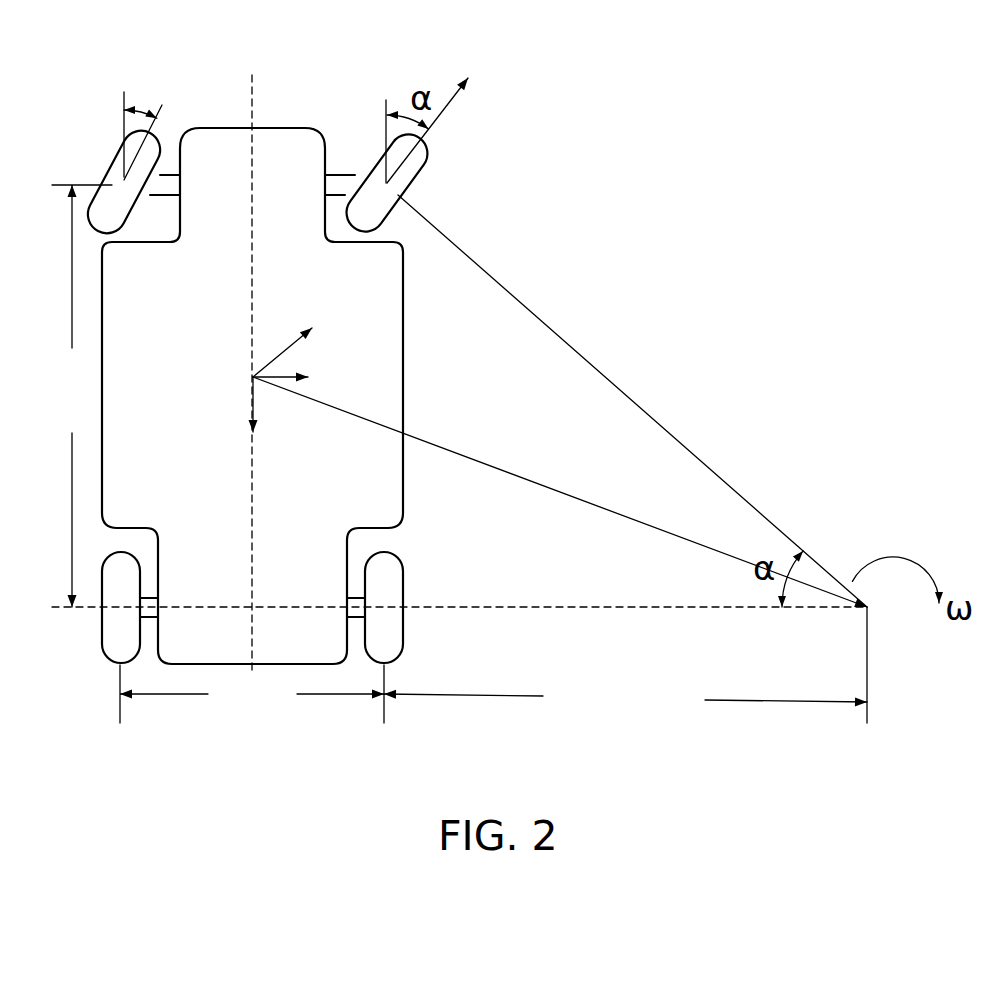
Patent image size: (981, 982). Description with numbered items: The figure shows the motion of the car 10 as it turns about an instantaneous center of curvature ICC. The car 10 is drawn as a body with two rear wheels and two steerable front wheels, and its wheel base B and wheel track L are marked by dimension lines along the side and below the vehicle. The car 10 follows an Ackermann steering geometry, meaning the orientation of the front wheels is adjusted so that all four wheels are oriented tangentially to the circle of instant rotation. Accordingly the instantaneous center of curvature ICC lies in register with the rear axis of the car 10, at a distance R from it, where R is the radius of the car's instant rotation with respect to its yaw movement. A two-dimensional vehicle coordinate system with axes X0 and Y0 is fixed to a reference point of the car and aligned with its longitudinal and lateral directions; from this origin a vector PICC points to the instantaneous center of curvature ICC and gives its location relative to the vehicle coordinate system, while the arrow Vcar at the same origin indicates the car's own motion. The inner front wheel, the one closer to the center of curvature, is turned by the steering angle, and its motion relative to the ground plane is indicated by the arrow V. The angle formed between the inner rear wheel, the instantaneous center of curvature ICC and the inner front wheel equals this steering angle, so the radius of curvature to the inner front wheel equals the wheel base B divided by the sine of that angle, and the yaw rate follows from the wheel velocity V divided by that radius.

The car 10 is at (207, 135).
The motion of the inner front wheel V is at (444, 126).
The vehicle velocity vector Vcar is at (326, 350).
The vehicle x-axis X0 is at (274, 423).
The vehicle y-axis Y0 is at (301, 387).
The position vector of the instantaneous center of curvature PICC is at (556, 437).
The instantaneous center of curvature ICC is at (831, 665).
The wheel base B is at (82, 396).
The wheel track L is at (252, 694).
The radius of instant rotation R is at (625, 697).